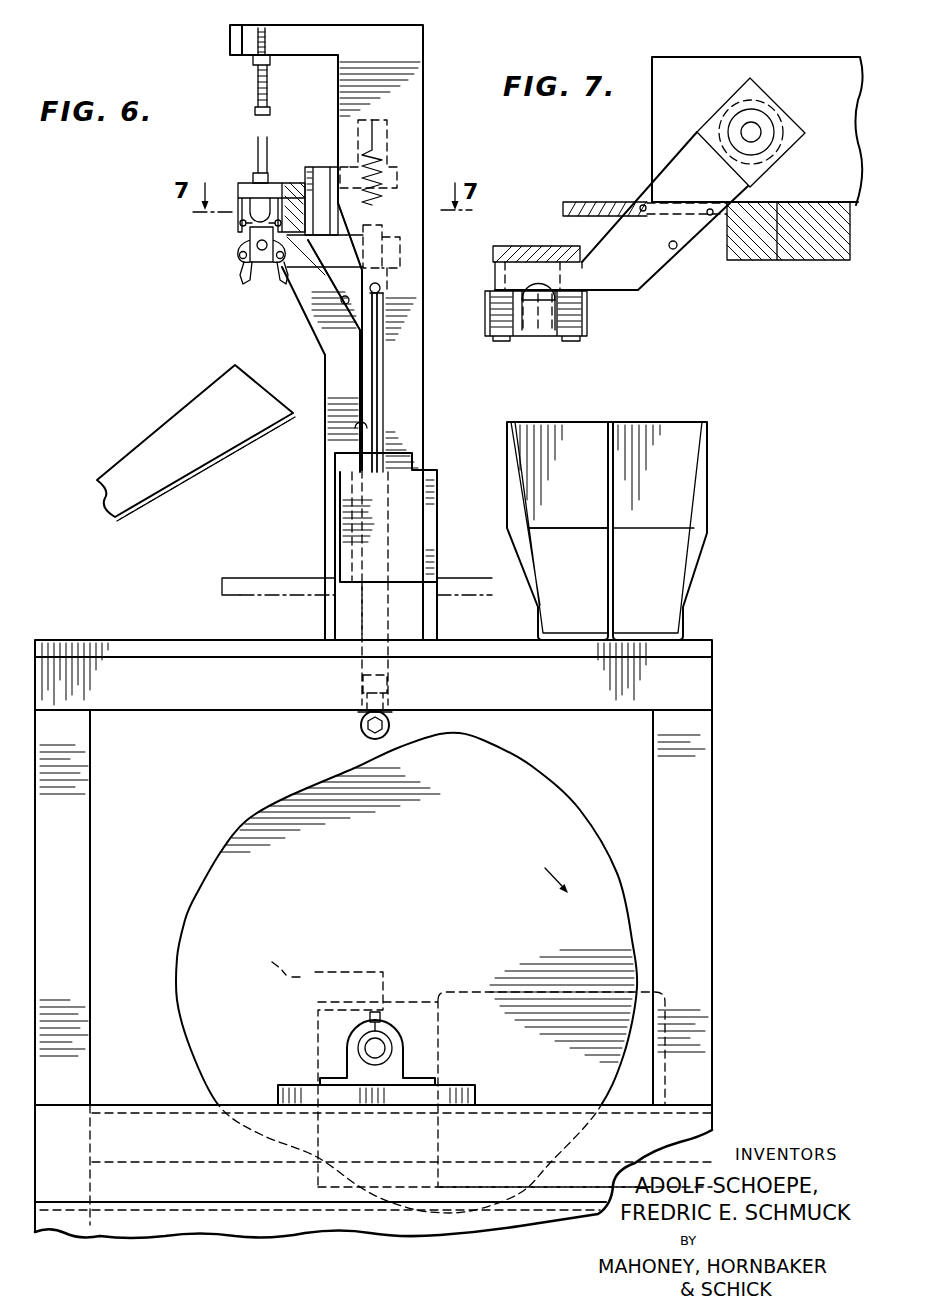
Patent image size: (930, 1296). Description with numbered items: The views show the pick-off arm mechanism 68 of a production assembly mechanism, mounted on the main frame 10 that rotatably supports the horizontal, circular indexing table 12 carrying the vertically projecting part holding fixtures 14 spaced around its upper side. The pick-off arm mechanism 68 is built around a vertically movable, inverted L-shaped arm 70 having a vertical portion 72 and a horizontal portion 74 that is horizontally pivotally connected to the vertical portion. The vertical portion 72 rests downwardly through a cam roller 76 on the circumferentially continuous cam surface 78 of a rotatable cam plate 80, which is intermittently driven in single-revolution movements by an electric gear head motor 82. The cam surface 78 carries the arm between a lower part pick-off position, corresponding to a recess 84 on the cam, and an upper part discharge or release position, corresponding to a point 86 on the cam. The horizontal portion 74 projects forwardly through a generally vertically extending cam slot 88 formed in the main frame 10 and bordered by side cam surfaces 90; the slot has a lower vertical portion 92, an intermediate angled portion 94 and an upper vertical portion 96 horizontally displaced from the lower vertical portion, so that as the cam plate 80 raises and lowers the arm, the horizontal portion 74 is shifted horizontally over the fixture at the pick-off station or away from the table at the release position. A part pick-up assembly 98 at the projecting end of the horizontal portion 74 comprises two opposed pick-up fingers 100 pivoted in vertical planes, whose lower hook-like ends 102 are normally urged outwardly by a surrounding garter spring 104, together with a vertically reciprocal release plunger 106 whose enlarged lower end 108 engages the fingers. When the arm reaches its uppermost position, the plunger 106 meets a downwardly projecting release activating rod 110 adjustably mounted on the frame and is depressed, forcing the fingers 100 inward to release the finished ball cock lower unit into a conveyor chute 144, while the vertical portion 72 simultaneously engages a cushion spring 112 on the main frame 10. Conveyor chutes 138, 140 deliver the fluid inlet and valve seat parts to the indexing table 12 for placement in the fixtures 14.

In FIG. 6, the main frame 10 is at (120, 636).
In FIG. 7, the main frame 10 is at (673, 49).
In FIG. 6, the indexing table 12 is at (270, 576).
In FIG. 6, the part holding fixtures 14 is at (326, 507).
In FIG. 6, the pick-off arm mechanism 68 is at (322, 356).
In FIG. 7, the pick-off arm mechanism 68 is at (635, 297).
In FIG. 6, the arm 70 is at (376, 367).
In FIG. 6, the vertical portion 72 is at (381, 397).
In FIG. 7, the vertical portion 72 is at (757, 128).
In FIG. 6, the horizontal portion 74 is at (332, 232).
In FIG. 7, the horizontal portion 74 is at (633, 260).
In FIG. 6, the cam roller 76 is at (356, 728).
In FIG. 6, the cam surface 78 is at (243, 820).
In FIG. 6, the cam plate 80 is at (196, 893).
In FIG. 6, the electric gear head motor 82 is at (640, 995).
In FIG. 6, the recess 84 is at (323, 1157).
In FIG. 6, the point 86 is at (528, 764).
In FIG. 6, the cam slot 88 is at (357, 429).
In FIG. 7, the cam slot 88 is at (677, 250).
In FIG. 6, the side cam surfaces 90 is at (337, 294).
In FIG. 7, the side cam surfaces 90 is at (643, 202).
In FIG. 6, the lower vertical portion 92 is at (344, 387).
In FIG. 6, the intermediate angled portion 94 is at (343, 316).
In FIG. 6, the upper vertical portion 96 is at (352, 209).
In FIG. 6, the part pick-up assembly 98 is at (246, 200).
In FIG. 7, the part pick-up assembly 98 is at (530, 248).
In FIG. 6, the pick-up fingers 100 is at (240, 256).
In FIG. 7, the pick-up fingers 100 is at (586, 320).
In FIG. 6, the hook-like ends 102 is at (283, 281).
In FIG. 6, the garter spring 104 is at (240, 223).
In FIG. 7, the garter spring 104 is at (542, 335).
In FIG. 6, the release plunger 106 is at (257, 150).
In FIG. 6, the enlarged lower end 108 is at (258, 203).
In FIG. 6, the release activating rod 110 is at (257, 78).
In FIG. 6, the cushion spring 112 is at (400, 175).
In FIG. 6, the conveyor chute 138 is at (658, 581).
In FIG. 6, the conveyor chute 140 is at (548, 552).
In FIG. 6, the conveyor chute 144 is at (182, 412).